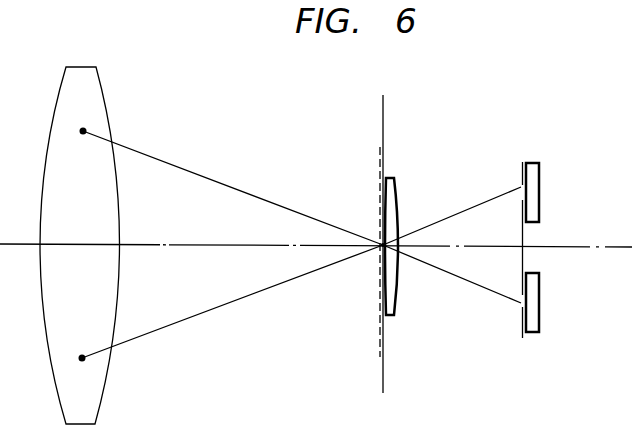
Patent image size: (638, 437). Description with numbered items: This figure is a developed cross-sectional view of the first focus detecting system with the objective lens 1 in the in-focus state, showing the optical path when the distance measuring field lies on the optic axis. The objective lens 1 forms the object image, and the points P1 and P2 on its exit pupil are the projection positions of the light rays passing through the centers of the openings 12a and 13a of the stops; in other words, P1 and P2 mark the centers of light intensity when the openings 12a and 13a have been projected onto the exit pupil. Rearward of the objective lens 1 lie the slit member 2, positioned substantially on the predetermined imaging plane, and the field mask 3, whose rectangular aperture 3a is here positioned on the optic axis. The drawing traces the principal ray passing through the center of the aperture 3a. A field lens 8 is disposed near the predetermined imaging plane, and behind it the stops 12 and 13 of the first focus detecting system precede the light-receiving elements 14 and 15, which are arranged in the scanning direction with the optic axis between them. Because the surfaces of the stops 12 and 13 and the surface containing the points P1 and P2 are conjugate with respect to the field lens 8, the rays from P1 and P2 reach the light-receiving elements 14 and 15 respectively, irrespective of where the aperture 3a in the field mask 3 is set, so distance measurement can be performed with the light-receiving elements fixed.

The objective lens 1 is at (100, 401).
The slit member 2 is at (379, 383).
The field mask 3 is at (387, 383).
The rectangular aperture 3a is at (377, 256).
The field lens 8 is at (399, 298).
The stop 12 is at (521, 171).
The stop opening 12a is at (520, 188).
The stop 13 is at (520, 335).
The stop opening 13a is at (520, 309).
The light-receiving element 14 is at (541, 178).
The light-receiving element 15 is at (540, 320).
The projection position P1 is at (82, 353).
The projection position P2 is at (83, 136).